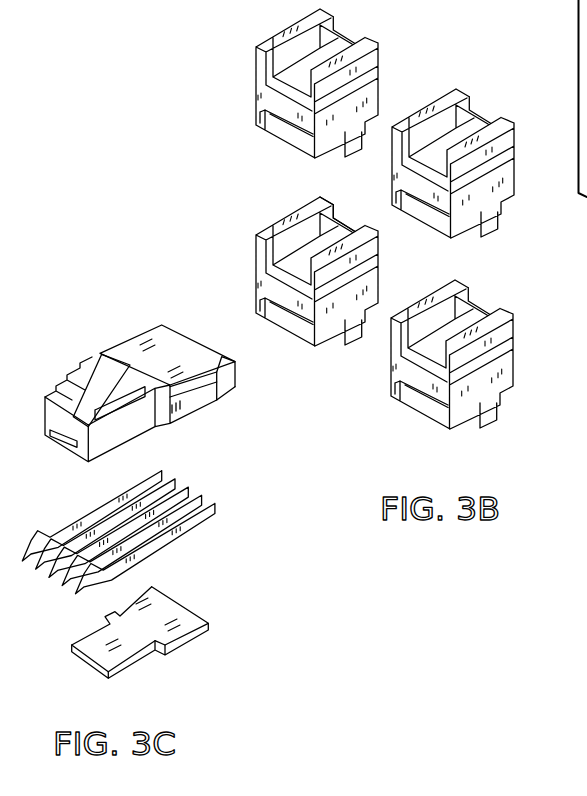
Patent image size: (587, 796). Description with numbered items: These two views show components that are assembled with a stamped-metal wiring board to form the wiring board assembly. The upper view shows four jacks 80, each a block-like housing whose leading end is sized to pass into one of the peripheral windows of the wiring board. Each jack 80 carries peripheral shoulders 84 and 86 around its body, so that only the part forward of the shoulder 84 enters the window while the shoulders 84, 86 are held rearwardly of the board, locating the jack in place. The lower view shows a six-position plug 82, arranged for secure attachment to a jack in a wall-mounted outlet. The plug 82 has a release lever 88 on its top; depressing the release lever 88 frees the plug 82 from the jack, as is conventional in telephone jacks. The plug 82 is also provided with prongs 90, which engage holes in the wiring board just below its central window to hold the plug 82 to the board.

In FIG. 3B, the jack 80 is at (297, 227).
In FIG. 3B, the peripheral shoulder 86 is at (324, 202).
In FIG. 3B, the peripheral shoulder 84 is at (378, 313).
In FIG. 3C, the 6P plug 82 is at (198, 410).
In FIG. 3C, the release lever 88 is at (116, 361).
In FIG. 3C, the prongs 90 is at (235, 387).